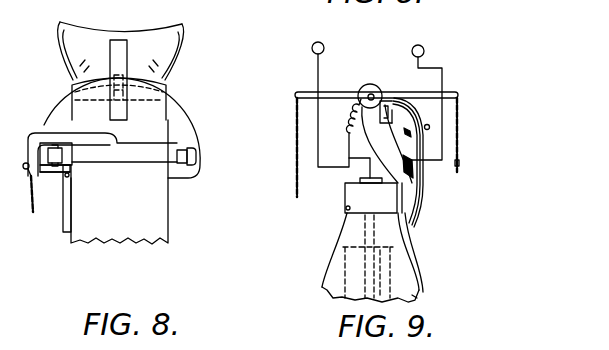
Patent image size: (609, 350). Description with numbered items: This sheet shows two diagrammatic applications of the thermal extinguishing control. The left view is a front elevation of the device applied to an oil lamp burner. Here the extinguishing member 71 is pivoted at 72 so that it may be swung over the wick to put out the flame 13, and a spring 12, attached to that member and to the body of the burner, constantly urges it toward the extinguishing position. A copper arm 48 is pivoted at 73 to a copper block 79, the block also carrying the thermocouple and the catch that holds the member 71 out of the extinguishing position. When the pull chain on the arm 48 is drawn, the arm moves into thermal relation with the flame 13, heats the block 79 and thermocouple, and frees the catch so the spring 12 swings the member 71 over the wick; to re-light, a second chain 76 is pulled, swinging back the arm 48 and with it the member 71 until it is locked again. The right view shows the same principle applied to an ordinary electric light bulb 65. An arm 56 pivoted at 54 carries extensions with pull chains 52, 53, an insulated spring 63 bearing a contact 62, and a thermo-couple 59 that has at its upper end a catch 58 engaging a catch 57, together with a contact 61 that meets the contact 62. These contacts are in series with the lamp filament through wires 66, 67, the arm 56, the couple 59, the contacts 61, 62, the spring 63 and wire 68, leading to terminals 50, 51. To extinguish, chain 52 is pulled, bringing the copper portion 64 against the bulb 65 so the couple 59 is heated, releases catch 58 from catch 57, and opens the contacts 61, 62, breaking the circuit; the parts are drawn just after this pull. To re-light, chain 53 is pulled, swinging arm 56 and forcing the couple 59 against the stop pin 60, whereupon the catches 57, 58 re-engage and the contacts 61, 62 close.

In FIG. 8, the spring 12 is at (65, 218).
In FIG. 8, the flame 13 is at (157, 40).
In FIG. 8, the arm 48 is at (118, 60).
In FIG. 9, the terminal 50 is at (324, 46).
In FIG. 9, the terminal 51 is at (425, 50).
In FIG. 9, the pull chain 52 is at (475, 135).
In FIG. 9, the pull chain 53 is at (296, 138).
In FIG. 9, the pivot 54 is at (373, 94).
In FIG. 9, the arm 56 is at (382, 147).
In FIG. 9, the catch 57 is at (383, 121).
In FIG. 9, the catch 58 is at (400, 104).
In FIG. 9, the thermo-couple 59 is at (404, 118).
In FIG. 9, the stop pin 60 is at (429, 129).
In FIG. 9, the contact 61 is at (408, 130).
In FIG. 9, the contact 62 is at (459, 163).
In FIG. 9, the insulated spring 63 is at (425, 167).
In FIG. 9, the portion 64 is at (414, 264).
In FIG. 9, the electric light bulb 65 is at (417, 292).
In FIG. 9, the wire 66 is at (316, 151).
In FIG. 9, the wire 67 is at (348, 149).
In FIG. 9, the wire 68 is at (443, 75).
In FIG. 8, the member 71 is at (120, 152).
In FIG. 8, the pivot 72 is at (54, 148).
In FIG. 8, the pivot 73 is at (24, 163).
In FIG. 8, the second chain 76 is at (30, 198).
In FIG. 8, the copper block 79 is at (48, 177).